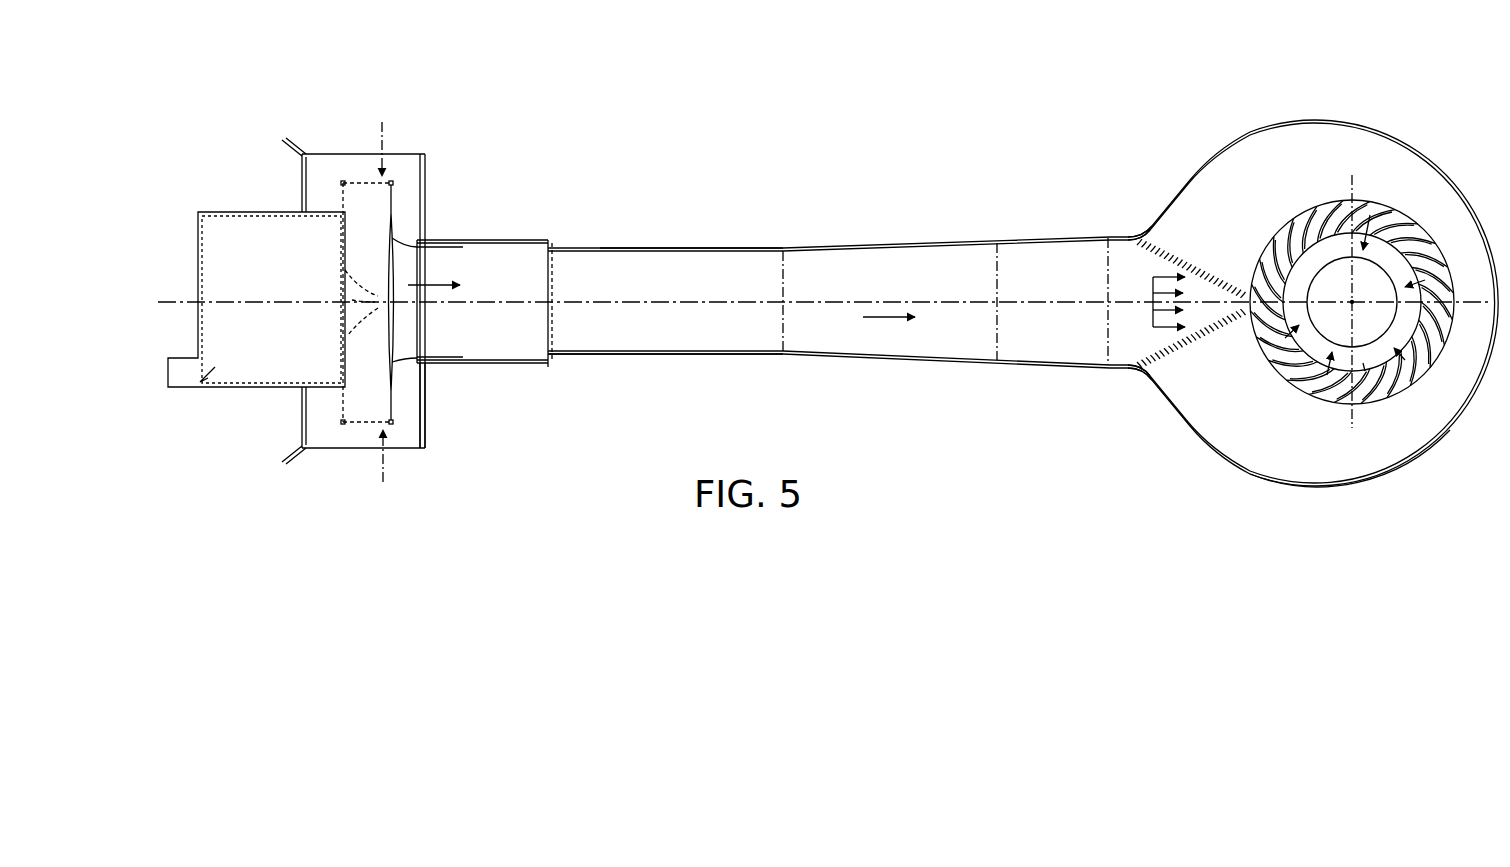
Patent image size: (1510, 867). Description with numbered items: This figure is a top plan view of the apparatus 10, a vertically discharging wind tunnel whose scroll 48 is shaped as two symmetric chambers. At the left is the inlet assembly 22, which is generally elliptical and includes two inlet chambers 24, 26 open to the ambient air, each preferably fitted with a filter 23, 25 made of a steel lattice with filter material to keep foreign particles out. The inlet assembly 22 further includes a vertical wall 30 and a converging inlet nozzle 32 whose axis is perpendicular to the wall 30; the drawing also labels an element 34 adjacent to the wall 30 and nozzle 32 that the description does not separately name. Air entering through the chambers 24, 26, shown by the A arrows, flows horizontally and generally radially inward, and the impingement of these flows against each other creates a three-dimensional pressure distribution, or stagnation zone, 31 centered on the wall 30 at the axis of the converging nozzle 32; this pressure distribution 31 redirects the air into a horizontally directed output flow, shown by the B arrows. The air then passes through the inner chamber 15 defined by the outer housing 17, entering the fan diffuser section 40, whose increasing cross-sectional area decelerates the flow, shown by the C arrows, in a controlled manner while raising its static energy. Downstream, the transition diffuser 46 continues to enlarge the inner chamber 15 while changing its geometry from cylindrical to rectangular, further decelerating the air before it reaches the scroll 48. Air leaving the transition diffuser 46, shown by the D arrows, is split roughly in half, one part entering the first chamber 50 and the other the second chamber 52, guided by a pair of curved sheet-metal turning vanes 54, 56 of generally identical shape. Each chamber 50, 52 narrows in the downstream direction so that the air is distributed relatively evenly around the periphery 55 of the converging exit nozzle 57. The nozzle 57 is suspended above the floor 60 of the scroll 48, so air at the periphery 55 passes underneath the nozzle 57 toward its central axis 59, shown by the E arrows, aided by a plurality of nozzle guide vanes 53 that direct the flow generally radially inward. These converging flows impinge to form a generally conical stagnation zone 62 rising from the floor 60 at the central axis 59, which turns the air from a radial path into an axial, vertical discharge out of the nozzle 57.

The apparatus 10 is at (595, 427).
The inner chamber 15 is at (750, 354).
The outer housing 17 is at (703, 247).
The inlet assembly 22 is at (438, 239).
The filter 23 is at (361, 183).
The inlet chamber 24 is at (414, 205).
The filter 25 is at (362, 422).
The inlet chamber 26 is at (410, 380).
The vertical wall 30 is at (350, 362).
The pressure distribution 31 is at (350, 310).
The converging inlet nozzle 32 is at (462, 248).
The flap valve 34 is at (397, 275).
The fan diffuser section 40 is at (637, 266).
The transition diffuser 46 is at (902, 268).
The scroll 48 is at (1128, 288).
The first chamber 50 is at (1323, 463).
The second chamber 52 is at (1310, 142).
The nozzle guide vanes 53 is at (1423, 237).
The turning vane 54 is at (1172, 353).
The periphery 55 is at (1263, 367).
The turning vane 56 is at (1163, 245).
The converging exit nozzle 57 is at (1363, 363).
The central axis 59 is at (1308, 264).
The floor 60 is at (1117, 362).
The stagnation zone 62 is at (1351, 301).
The incoming air flow arrows A is at (382, 130).
The downstream air flow arrows B is at (440, 283).
The decelerating air flow arrows C is at (892, 322).
The transition diffuser exit flow arrows D is at (1153, 303).
The nozzle inlet flow arrows E is at (1258, 349).